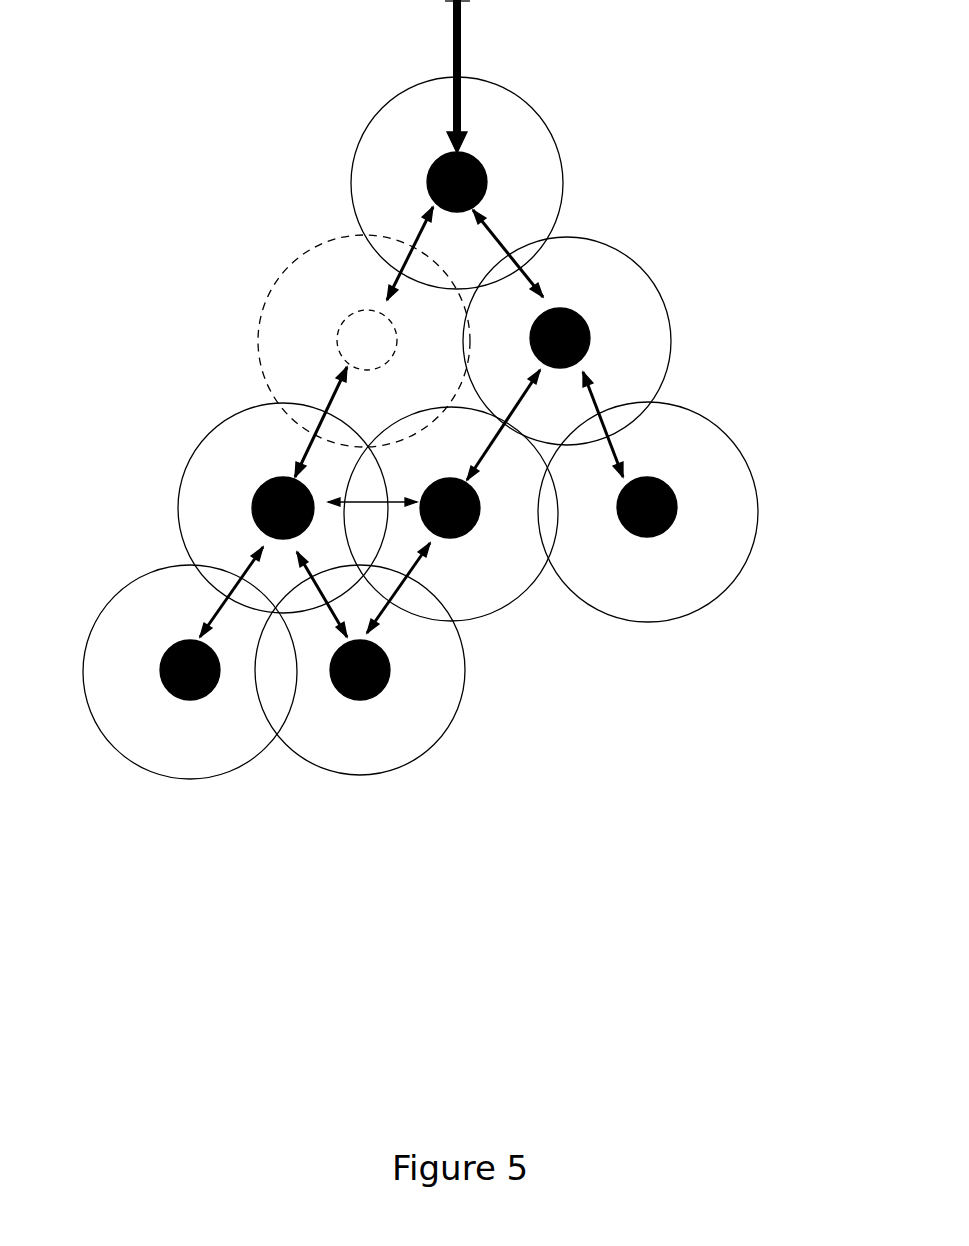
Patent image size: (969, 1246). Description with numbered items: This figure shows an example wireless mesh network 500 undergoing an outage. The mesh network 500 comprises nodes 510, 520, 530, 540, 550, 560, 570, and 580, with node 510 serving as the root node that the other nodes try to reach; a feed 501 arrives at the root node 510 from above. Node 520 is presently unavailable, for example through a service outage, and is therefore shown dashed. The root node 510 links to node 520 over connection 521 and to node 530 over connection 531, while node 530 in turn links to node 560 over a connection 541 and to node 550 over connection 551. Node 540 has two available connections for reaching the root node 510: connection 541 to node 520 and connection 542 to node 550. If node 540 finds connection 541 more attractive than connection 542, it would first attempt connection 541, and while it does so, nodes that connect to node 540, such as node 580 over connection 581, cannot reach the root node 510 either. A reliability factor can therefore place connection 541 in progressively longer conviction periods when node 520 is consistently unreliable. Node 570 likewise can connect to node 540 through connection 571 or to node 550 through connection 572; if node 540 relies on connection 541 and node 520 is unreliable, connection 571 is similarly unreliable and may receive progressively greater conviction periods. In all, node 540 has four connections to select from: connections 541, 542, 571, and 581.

The wireless mesh network 500 is at (413, 423).
The upstream connection to root 501 is at (470, 33).
The root node 510 is at (437, 132).
The node 520 is at (345, 301).
The node 530 is at (641, 297).
The node 540 is at (253, 472).
The node 550 is at (516, 584).
The node 560 is at (721, 469).
The node 570 is at (425, 734).
The node 580 is at (180, 619).
The link between node 520 and root 521 is at (408, 228).
The link between root and node 530 531 is at (516, 218).
The connection 541 is at (320, 396).
The connection 542 is at (375, 514).
The link between nodes 530 and 550 551 is at (497, 460).
The connection 571 is at (308, 603).
The connection 572 is at (390, 619).
The connection 581 is at (228, 565).